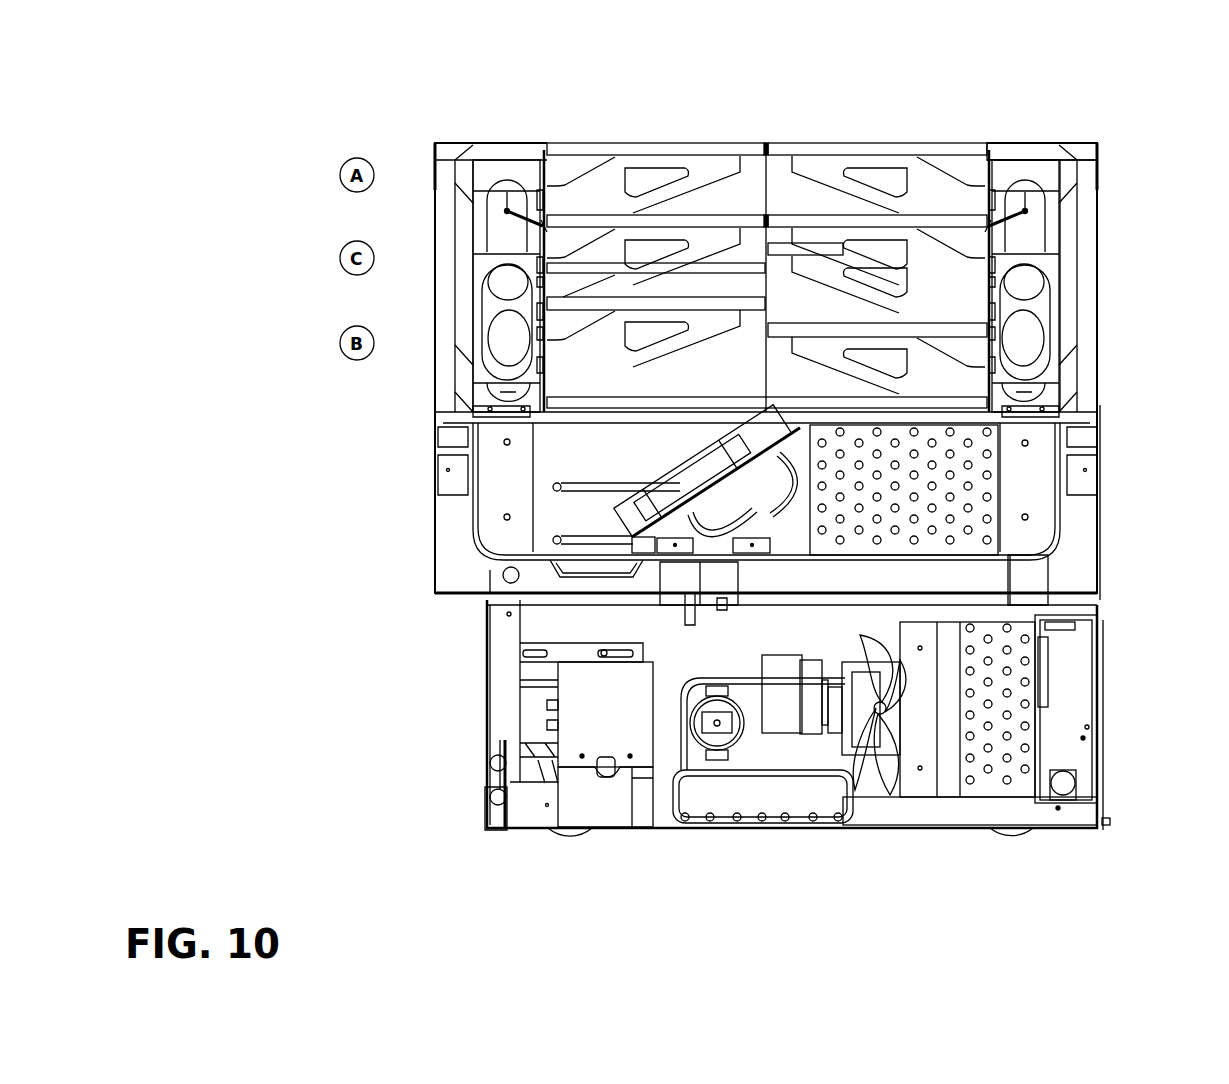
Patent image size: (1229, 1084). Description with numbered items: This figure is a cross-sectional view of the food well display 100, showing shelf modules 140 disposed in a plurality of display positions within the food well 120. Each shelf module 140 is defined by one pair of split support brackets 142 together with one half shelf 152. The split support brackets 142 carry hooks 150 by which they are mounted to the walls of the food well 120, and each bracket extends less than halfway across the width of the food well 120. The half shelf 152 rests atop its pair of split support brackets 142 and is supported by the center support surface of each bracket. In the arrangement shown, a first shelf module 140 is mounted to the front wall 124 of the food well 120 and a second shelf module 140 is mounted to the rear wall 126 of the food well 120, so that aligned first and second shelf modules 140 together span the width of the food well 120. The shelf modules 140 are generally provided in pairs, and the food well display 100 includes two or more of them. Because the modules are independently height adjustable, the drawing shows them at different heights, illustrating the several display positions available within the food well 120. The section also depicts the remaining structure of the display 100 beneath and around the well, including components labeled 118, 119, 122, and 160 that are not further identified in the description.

The food well display 100 is at (273, 75).
The housing 118 is at (1065, 175).
The divider wall 119 is at (987, 182).
The food well 120 is at (775, 185).
The base unit 122 is at (862, 412).
The front wall 124 is at (470, 240).
The rear wall 126 is at (1060, 335).
The shelf module 140 is at (635, 143).
The split support bracket 142 is at (699, 172).
The hook 150 is at (543, 222).
The half shelf 152 is at (585, 147).
The hinge 160 is at (458, 207).